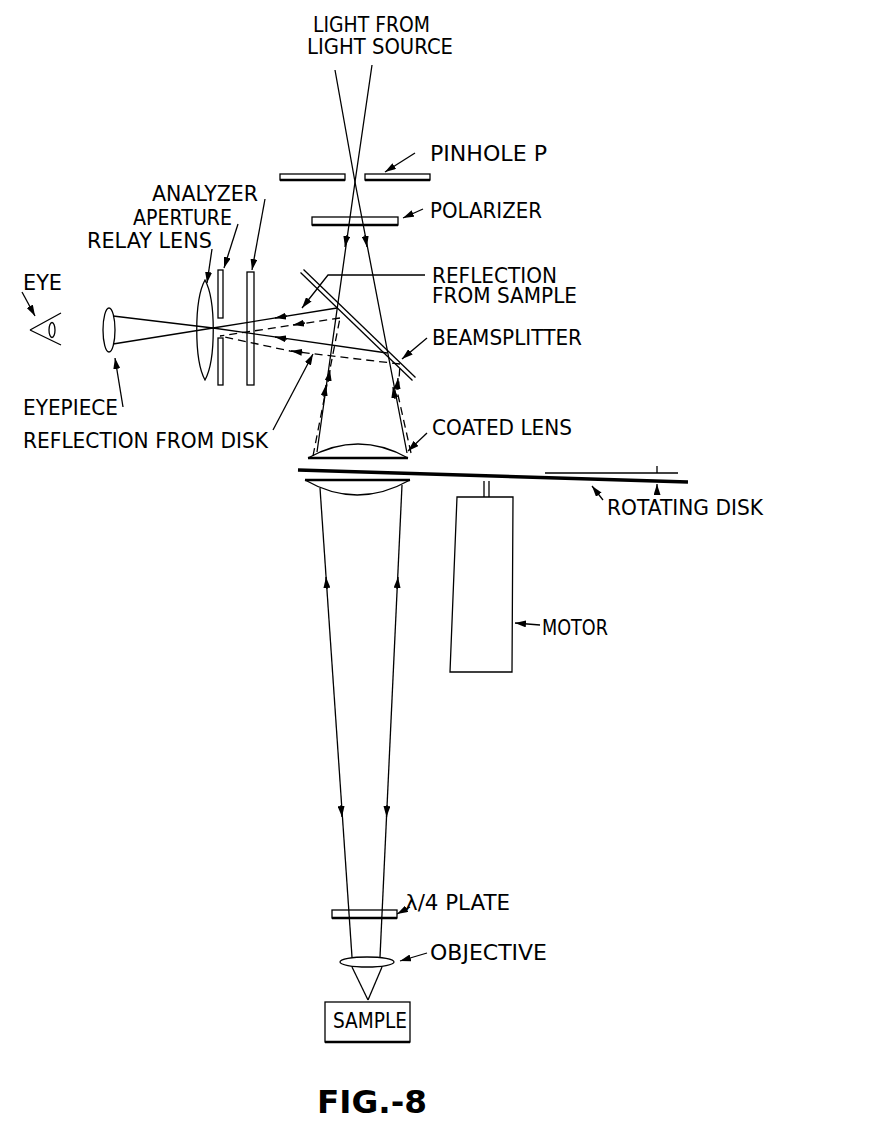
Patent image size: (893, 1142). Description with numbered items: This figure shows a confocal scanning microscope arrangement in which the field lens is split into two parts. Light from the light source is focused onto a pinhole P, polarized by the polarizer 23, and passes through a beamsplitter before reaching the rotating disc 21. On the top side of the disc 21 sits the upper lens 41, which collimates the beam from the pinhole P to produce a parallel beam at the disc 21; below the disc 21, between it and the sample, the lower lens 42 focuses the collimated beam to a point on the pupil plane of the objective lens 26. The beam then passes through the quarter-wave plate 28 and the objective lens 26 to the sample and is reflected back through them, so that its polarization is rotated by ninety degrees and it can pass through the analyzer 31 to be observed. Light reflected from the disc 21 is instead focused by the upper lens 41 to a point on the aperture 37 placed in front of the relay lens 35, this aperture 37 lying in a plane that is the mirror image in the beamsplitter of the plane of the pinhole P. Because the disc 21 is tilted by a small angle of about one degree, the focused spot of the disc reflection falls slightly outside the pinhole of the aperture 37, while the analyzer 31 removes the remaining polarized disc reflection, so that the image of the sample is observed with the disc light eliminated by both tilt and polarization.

The polarizer 23 is at (398, 226).
The relay lens 35 is at (198, 298).
The aperture 37 is at (221, 388).
The analyzer 31 is at (241, 385).
The upper lens 41 is at (310, 453).
The lower lens 42 is at (310, 484).
The disc 21 is at (533, 480).
The λ/4 plate 28 is at (337, 910).
The objective lens 26 is at (342, 960).